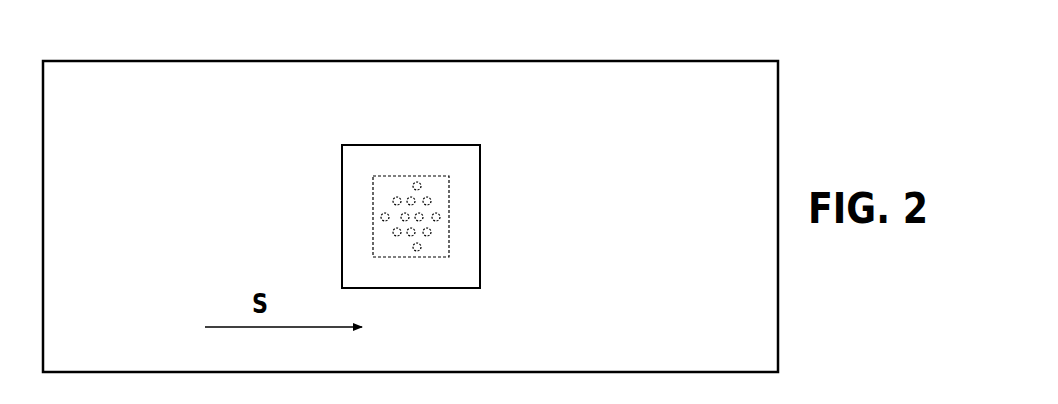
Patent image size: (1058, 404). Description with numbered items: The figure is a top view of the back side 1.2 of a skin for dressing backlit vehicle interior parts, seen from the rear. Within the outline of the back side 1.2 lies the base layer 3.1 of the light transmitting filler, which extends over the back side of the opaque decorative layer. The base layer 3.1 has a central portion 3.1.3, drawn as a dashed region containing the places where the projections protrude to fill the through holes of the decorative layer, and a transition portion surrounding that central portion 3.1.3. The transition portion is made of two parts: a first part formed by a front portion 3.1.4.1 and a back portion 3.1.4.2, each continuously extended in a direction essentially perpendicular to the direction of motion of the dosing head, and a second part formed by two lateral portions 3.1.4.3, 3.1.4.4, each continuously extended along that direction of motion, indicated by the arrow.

The back side 1.2 is at (673, 72).
The base layer 3.1 is at (466, 136).
The central portion 3.1.3 is at (432, 238).
The front portion 3.1.4.1 is at (470, 190).
The back portion 3.1.4.2 is at (353, 202).
The lateral portion 3.1.4.3 is at (405, 162).
The lateral portion 3.1.4.4 is at (423, 268).